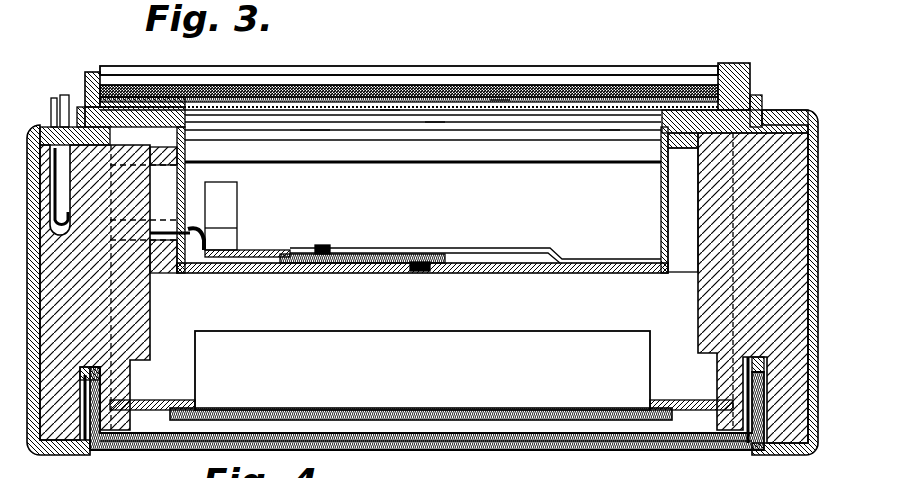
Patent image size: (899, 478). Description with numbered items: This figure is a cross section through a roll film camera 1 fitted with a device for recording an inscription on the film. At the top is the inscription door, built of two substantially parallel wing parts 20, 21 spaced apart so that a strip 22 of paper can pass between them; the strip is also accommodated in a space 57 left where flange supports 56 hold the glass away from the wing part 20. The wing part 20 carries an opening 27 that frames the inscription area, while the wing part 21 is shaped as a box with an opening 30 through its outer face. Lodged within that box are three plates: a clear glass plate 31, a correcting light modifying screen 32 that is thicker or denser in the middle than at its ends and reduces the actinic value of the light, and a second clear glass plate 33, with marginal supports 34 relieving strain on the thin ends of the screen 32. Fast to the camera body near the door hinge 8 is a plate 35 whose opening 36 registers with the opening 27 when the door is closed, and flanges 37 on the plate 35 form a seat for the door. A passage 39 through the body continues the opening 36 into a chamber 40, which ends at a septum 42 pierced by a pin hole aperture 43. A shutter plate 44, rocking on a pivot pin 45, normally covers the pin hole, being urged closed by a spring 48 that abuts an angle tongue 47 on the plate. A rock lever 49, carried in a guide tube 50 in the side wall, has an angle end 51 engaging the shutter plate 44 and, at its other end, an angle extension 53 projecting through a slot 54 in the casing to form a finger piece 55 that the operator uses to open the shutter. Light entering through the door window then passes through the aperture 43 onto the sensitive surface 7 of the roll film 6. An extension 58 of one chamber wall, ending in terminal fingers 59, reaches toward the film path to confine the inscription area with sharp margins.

The camera 1 is at (53, 452).
The roll film 6 is at (397, 425).
The sensitive surface 7 is at (447, 410).
The hinge 8 is at (686, 152).
The wing part 20 is at (186, 116).
The wing part 21 is at (98, 74).
The strip 22 is at (391, 110).
The opening 27 is at (562, 106).
The opening 30 is at (387, 72).
The plate 31 is at (501, 100).
The correcting light modifying screen 32 is at (495, 80).
The plate 33 is at (326, 78).
The marginal supports 34 is at (130, 105).
The plate 35 is at (122, 100).
The opening 36 is at (434, 122).
The flanges 37 is at (78, 107).
The passage 39 is at (314, 133).
The chamber 40 is at (423, 157).
The septum 42 is at (538, 273).
The pin hole aperture 43 is at (425, 273).
The shutter plate 44 is at (419, 253).
The pivot pin 45 is at (331, 245).
The angle tongue 47 is at (232, 216).
The spring 48 is at (519, 248).
The rock lever 49 is at (194, 226).
The guide tube 50 is at (164, 238).
The angle end 51 is at (206, 228).
The angle extension 53 is at (54, 145).
The slot 54 is at (53, 122).
The finger piece 55 is at (64, 100).
The flange supports 56 is at (168, 110).
The space 57 is at (609, 128).
The extension 58 is at (382, 333).
The terminal fingers 59 is at (167, 400).